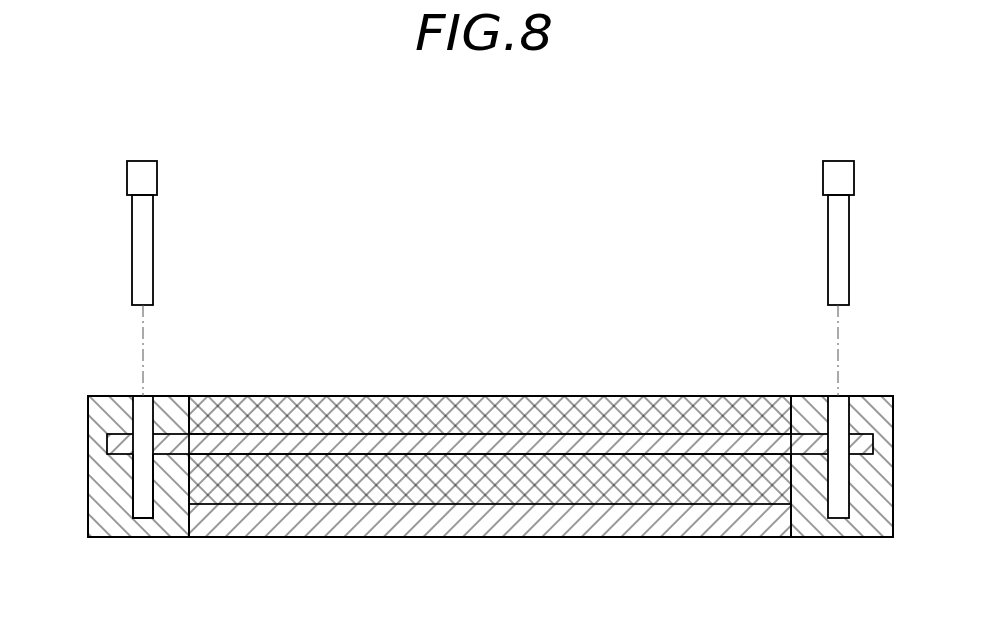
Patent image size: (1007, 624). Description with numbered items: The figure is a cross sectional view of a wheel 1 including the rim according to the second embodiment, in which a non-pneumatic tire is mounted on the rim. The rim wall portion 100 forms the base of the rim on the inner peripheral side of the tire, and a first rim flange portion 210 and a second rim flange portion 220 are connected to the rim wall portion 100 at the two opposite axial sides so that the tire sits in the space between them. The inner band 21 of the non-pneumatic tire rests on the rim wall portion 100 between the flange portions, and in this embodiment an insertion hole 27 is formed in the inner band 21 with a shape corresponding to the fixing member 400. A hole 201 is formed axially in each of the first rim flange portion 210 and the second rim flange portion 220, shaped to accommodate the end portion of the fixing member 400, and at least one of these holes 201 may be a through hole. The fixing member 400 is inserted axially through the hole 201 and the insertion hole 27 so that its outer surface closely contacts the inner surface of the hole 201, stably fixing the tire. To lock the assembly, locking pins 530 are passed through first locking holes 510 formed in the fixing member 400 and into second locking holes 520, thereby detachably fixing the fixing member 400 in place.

The battery module 1 is at (512, 136).
The inner band 21 is at (568, 422).
The insertion hole 27 is at (309, 439).
The rim wall portion 100 is at (443, 522).
The hole 201 is at (109, 446).
The first rim flange portion 210 is at (115, 525).
The second rim flange portion 220 is at (870, 525).
The fixing member 400 is at (452, 445).
The first locking hole 510 is at (133, 412).
The second locking hole 520 is at (133, 488).
The locking pin 530 is at (157, 172).